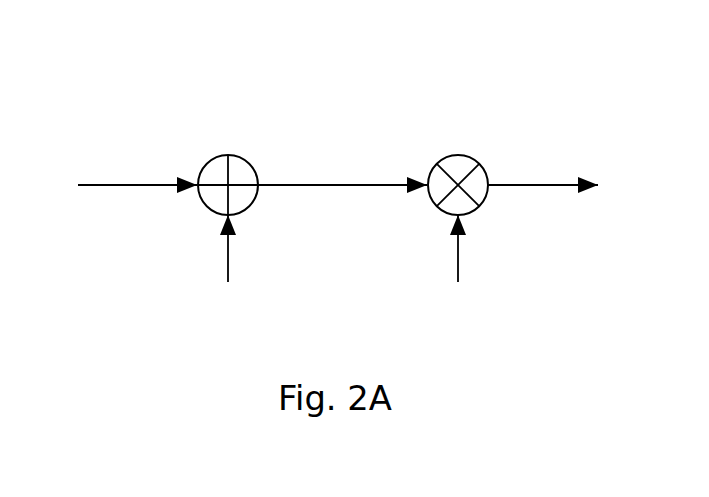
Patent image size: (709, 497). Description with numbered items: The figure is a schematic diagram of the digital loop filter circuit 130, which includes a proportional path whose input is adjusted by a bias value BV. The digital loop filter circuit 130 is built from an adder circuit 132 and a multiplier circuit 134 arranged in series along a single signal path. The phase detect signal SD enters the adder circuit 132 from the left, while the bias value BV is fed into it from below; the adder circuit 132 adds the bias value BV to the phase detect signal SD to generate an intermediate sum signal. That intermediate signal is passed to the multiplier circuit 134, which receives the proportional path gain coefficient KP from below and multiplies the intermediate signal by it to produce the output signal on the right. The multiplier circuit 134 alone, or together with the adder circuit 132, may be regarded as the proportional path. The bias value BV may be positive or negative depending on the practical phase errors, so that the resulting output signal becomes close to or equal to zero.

The digital loop filter circuit 130 is at (358, 36).
The adder circuit 132 is at (249, 160).
The multiplier circuit 134 is at (477, 160).